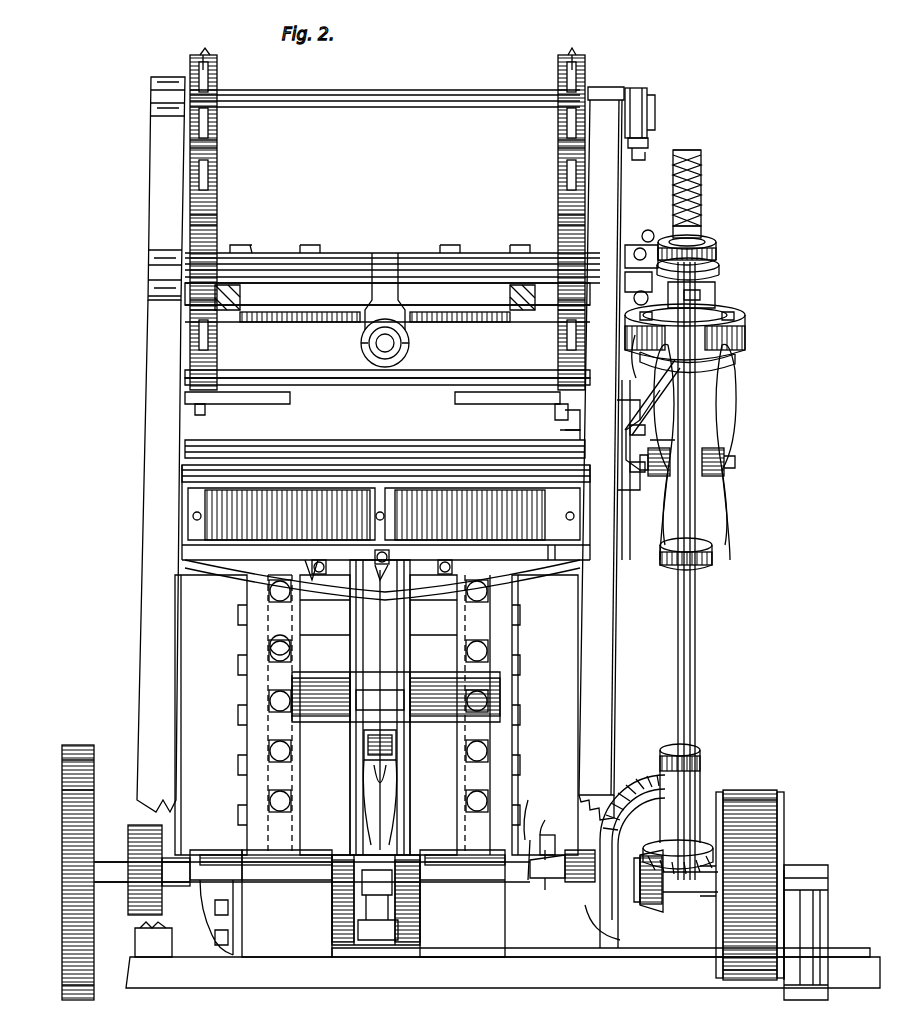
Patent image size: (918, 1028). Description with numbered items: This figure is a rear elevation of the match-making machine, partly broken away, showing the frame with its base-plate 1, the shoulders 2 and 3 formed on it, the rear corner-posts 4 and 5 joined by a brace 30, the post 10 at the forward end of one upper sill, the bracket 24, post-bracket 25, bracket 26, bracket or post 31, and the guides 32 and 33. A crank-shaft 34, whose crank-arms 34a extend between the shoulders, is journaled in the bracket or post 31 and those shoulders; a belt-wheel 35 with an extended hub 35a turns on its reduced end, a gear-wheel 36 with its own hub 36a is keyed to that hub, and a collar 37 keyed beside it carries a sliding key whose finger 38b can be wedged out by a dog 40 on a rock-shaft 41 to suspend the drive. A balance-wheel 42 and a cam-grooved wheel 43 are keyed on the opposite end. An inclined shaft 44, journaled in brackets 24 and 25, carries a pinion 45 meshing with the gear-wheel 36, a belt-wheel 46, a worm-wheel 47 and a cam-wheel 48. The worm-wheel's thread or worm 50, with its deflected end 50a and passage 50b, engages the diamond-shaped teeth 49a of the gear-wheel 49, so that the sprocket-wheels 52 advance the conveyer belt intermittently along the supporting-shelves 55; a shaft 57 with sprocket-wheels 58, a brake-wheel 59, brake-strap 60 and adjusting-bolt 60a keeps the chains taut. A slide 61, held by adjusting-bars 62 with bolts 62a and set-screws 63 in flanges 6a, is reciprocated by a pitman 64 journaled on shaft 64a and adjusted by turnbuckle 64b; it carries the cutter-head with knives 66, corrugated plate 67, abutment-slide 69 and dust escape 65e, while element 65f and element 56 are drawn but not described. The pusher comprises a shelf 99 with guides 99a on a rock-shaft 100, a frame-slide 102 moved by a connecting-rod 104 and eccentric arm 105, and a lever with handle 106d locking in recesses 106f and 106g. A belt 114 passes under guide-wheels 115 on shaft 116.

The base-plate 1 is at (305, 975).
The shoulder 2 is at (470, 958).
The shoulder 3 is at (265, 950).
The rear corner-post 4 is at (610, 722).
The rear corner-post 5 is at (143, 672).
The flanges 6a is at (245, 748).
The post 10 is at (148, 188).
The bracket 24 is at (745, 386).
The post-bracket 25 is at (615, 930).
The bracket 26 is at (636, 500).
The brace 30 is at (352, 440).
The bracket or post 31 is at (790, 985).
The guide 32 is at (182, 495).
The guide 33 is at (565, 425).
The crank-shaft 34 is at (110, 895).
The crank-arms 34a is at (320, 935).
The belt-wheel 35 is at (750, 790).
The extended hub 35a is at (700, 896).
The gear-wheel 36 is at (650, 912).
The extended hub 36a is at (587, 923).
The collar 37 is at (606, 818).
The finger 38b is at (526, 838).
The dog 40 is at (545, 835).
The rock-shaft 41 is at (490, 905).
The balance-wheel 42 is at (68, 745).
The wheel 43 is at (128, 830).
The inclined shaft 44 is at (695, 668).
The pinion 45 is at (698, 772).
The belt-wheel 46 is at (712, 560).
The worm-wheel 47 is at (745, 310).
The cam-wheel 48 is at (716, 240).
The gear-wheel 49 is at (701, 210).
The diamond-shaped teeth 49a is at (701, 180).
The thread or worm 50 is at (735, 352).
The deflected thread end 50a is at (665, 378).
The passage 50b is at (636, 372).
The sprocket-wheels 52 is at (217, 192).
The supporting-shelves 55 is at (230, 402).
The stop 56 is at (648, 142).
The shaft 57 is at (375, 112).
The sprocket-wheels 58 is at (202, 58).
The brake-wheel 59 is at (655, 110).
The brake-strap 60 is at (640, 88).
The adjusting-bolt 60a is at (645, 158).
The slide 61 is at (457, 612).
The adjusting-bars 62 is at (275, 675).
The bolts 62a is at (270, 645).
The set-screws 63 is at (245, 615).
The pitman 64 is at (355, 890).
The shaft 64a is at (445, 730).
The turnbuckle 64b is at (370, 825).
The cut-away portion 65e is at (322, 582).
The bolt 65f is at (380, 585).
The knives 66 is at (210, 505).
The corrugated plate 67 is at (480, 505).
The abutment-slide 69 is at (550, 560).
The shelf 99 is at (465, 315).
The guides 99a is at (232, 310).
The rock-shaft 100 is at (410, 250).
The frame-slide 102 is at (300, 310).
The connecting-rod 104 is at (370, 355).
The eccentric arm 105 is at (415, 310).
The handle 106d is at (636, 305).
The recess 106f is at (645, 232).
The recess 106g is at (719, 274).
The belt 114 is at (710, 432).
The guide-wheels 115 is at (724, 478).
The shaft 116 is at (735, 462).